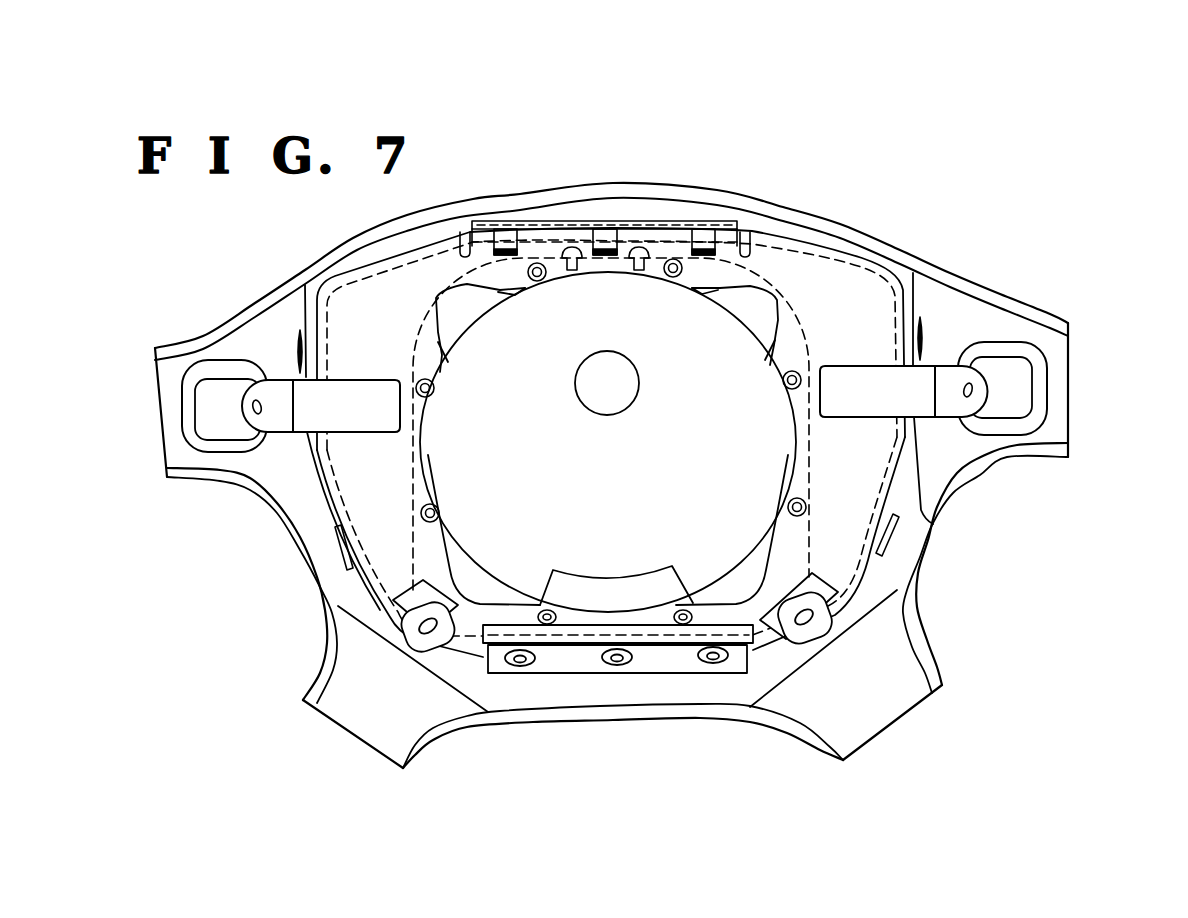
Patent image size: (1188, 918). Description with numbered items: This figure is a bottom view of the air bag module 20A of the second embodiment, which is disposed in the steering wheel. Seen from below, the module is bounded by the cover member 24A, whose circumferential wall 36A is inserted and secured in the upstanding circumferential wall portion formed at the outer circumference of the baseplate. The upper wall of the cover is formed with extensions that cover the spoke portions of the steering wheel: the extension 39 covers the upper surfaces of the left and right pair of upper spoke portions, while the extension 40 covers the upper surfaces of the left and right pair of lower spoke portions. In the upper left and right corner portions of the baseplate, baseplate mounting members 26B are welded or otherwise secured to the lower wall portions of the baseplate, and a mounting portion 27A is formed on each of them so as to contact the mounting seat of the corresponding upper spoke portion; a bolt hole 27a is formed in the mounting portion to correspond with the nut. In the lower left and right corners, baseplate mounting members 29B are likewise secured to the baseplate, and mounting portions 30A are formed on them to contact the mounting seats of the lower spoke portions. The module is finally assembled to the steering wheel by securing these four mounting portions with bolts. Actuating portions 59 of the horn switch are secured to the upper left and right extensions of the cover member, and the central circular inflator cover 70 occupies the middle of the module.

The air bag module 20A is at (782, 160).
The cover member 24A is at (630, 183).
The circumferential wall 36A is at (855, 270).
The baseplate mounting member 26B is at (953, 370).
The mounting portion 27A is at (974, 396).
The bolt hole 27a is at (1062, 319).
The actuating portion 59 is at (1026, 400).
The extension 39 is at (990, 443).
The mounting portion 30A is at (830, 620).
The baseplate mounting member 29B is at (795, 640).
The extension 40 is at (828, 717).
The inflator cover 70 is at (413, 452).